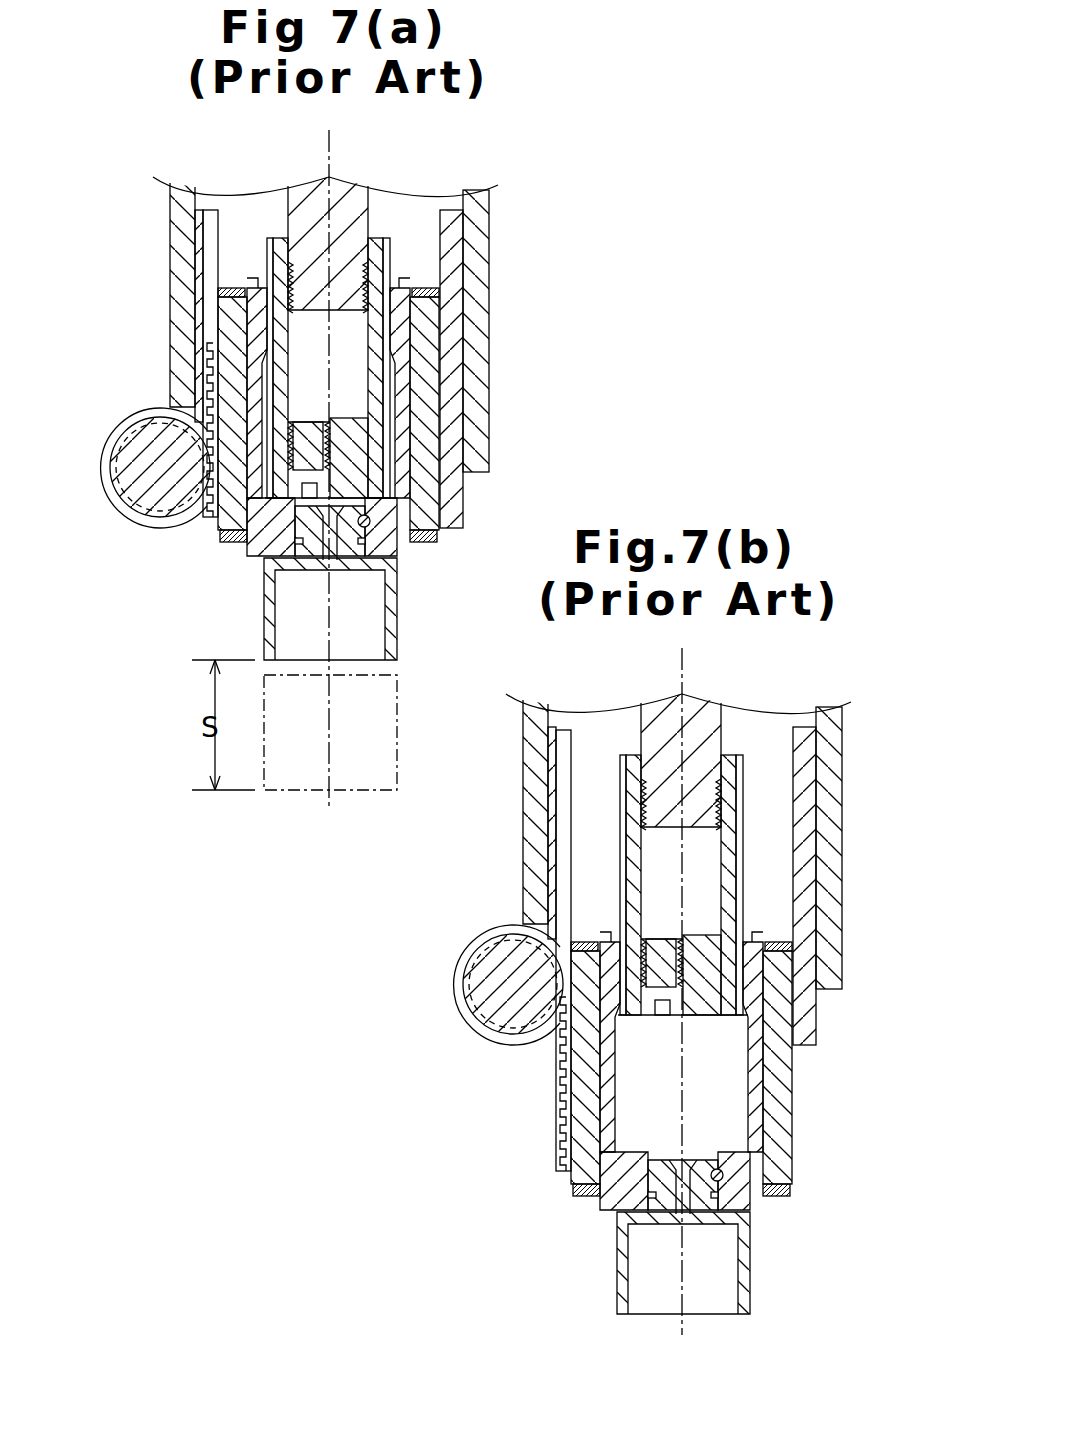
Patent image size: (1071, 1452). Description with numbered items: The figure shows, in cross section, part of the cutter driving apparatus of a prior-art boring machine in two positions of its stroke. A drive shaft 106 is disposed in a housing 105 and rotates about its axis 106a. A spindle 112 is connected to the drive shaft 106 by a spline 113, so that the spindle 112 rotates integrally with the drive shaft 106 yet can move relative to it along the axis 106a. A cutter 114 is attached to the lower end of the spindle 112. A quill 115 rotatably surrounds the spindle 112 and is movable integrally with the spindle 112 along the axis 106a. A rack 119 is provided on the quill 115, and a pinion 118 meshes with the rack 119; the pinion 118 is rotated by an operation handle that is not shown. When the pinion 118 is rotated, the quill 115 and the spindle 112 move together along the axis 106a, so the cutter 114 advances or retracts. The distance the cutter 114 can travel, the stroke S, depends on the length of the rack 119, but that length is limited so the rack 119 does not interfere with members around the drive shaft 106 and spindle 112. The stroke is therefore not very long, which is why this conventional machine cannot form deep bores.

In FIG. 7a, the housing 105 is at (462, 332).
In FIG. 7b, the housing 105 is at (815, 849).
In FIG. 7a, the drive shaft 106 is at (298, 186).
In FIG. 7b, the drive shaft 106 is at (653, 705).
In FIG. 7a, the axis 106a is at (330, 157).
In FIG. 7b, the axis 106a is at (684, 682).
In FIG. 7a, the spindle 112 is at (400, 548).
In FIG. 7b, the spindle 112 is at (742, 1188).
In FIG. 7a, the spline 113 is at (392, 270).
In FIG. 7b, the spline 113 is at (750, 935).
In FIG. 7a, the cutter 114 is at (393, 608).
In FIG. 7b, the cutter 114 is at (752, 1295).
In FIG. 7a, the quill 115 is at (442, 481).
In FIG. 7b, the quill 115 is at (790, 1105).
In FIG. 7a, the pinion 118 is at (145, 455).
In FIG. 7b, the pinion 118 is at (500, 977).
In FIG. 7a, the rack 119 is at (200, 377).
In FIG. 7b, the rack 119 is at (562, 1112).